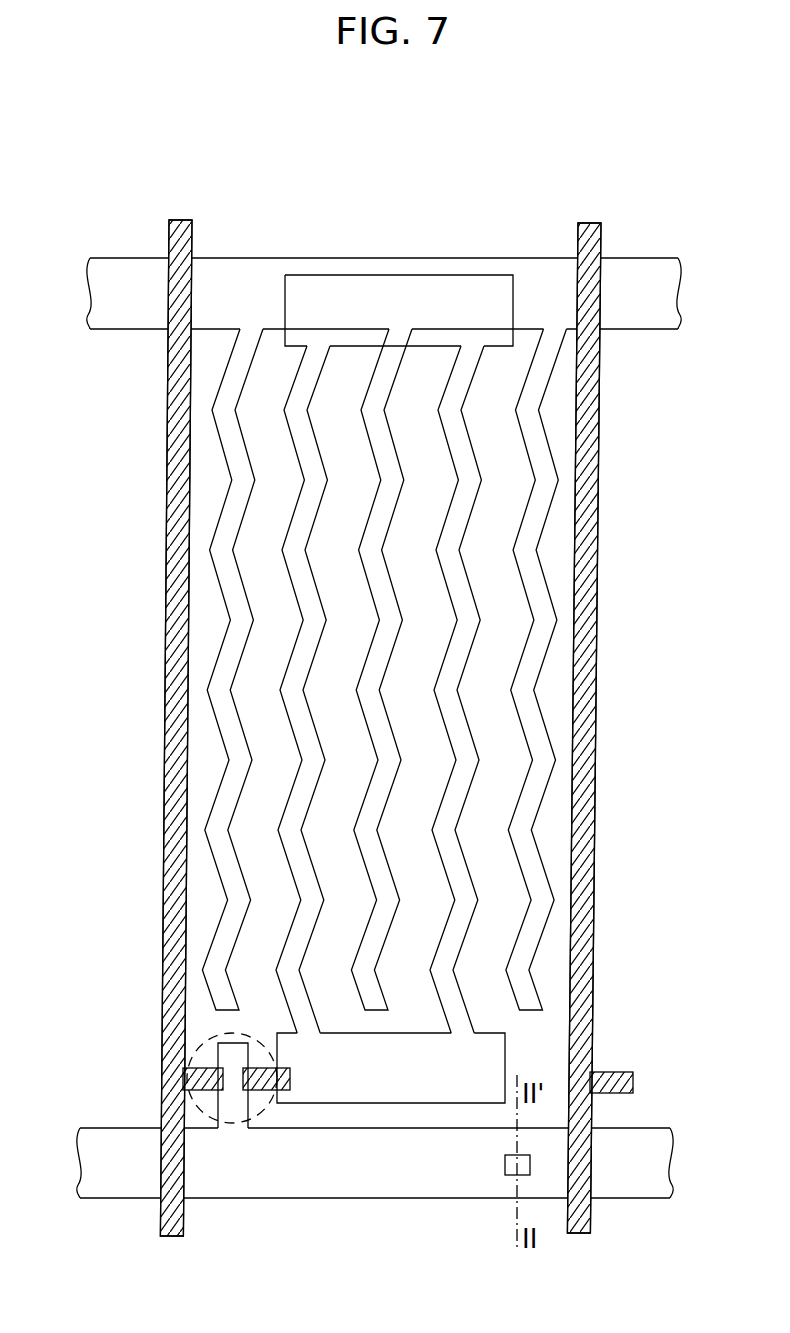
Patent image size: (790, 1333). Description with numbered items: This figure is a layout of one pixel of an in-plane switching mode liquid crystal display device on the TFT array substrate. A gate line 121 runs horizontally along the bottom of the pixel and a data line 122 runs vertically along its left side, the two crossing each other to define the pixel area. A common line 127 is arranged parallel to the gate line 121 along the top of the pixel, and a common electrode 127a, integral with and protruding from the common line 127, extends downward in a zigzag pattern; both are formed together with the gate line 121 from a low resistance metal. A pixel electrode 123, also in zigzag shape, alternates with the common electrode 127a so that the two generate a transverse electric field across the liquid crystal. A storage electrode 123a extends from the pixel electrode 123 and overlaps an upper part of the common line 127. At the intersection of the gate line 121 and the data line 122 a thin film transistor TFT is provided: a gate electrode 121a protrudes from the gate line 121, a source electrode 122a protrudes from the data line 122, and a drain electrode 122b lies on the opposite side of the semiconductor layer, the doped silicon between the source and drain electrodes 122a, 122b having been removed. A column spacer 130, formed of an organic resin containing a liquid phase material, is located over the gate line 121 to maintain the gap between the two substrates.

The data line 122 is at (185, 222).
The common line 127 is at (543, 290).
The gate line 121 is at (408, 1162).
The storage electrode 123a is at (395, 285).
The common electrode 127a is at (390, 473).
The pixel electrode 123 is at (303, 583).
The gate electrode 121a is at (232, 1105).
The source electrode 122a is at (200, 1078).
The drain electrode 122b is at (265, 1090).
The thin film transistor TFT is at (206, 1040).
The column spacer 130 is at (530, 1164).